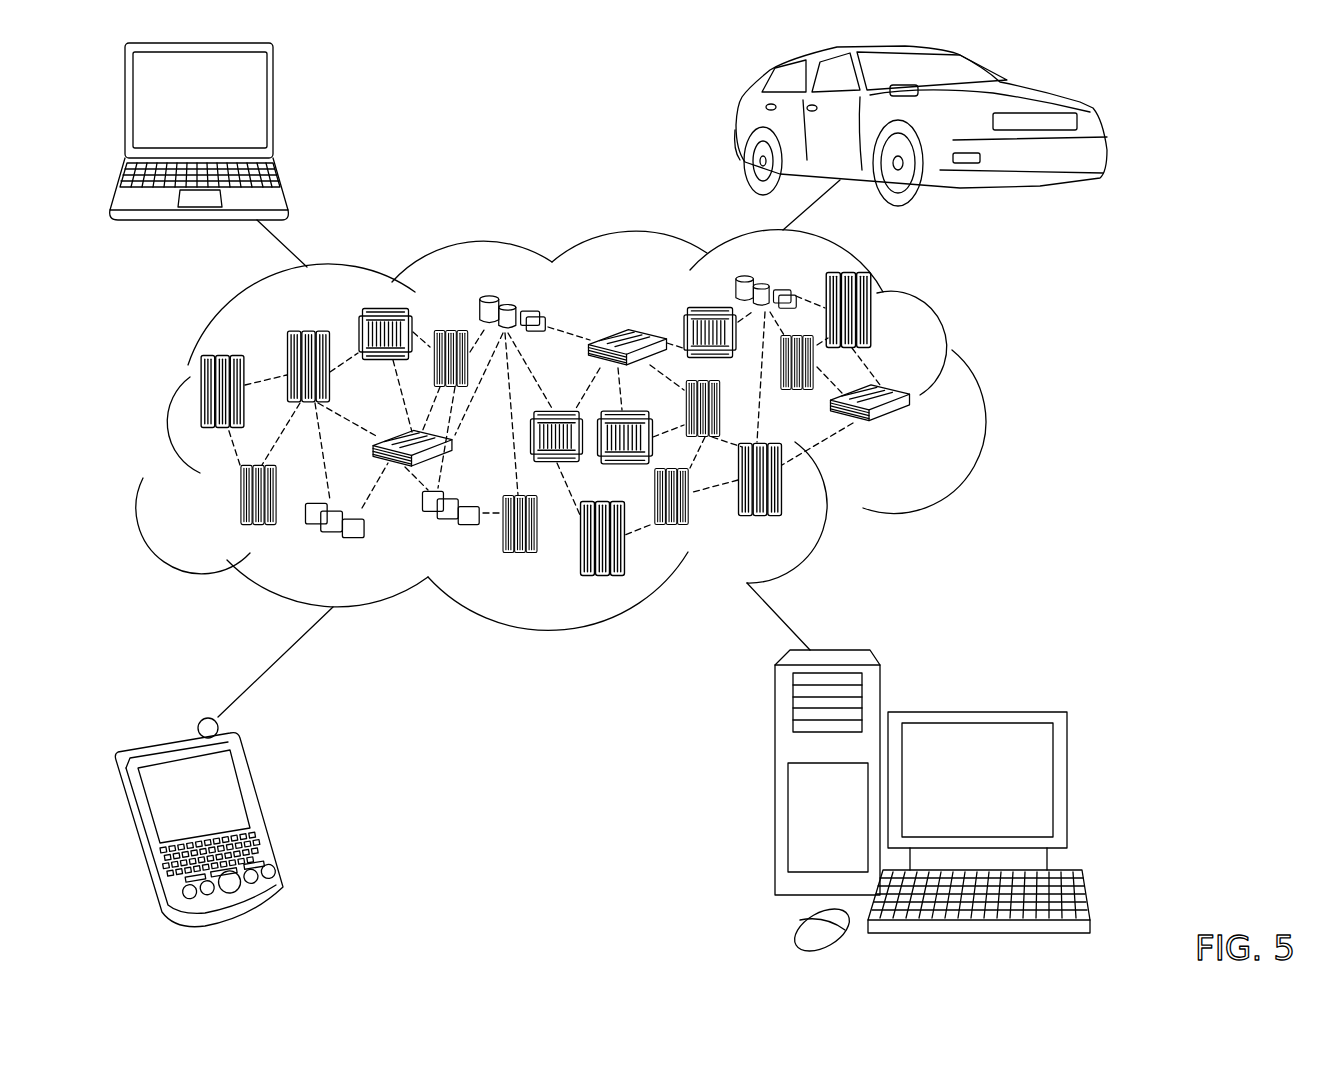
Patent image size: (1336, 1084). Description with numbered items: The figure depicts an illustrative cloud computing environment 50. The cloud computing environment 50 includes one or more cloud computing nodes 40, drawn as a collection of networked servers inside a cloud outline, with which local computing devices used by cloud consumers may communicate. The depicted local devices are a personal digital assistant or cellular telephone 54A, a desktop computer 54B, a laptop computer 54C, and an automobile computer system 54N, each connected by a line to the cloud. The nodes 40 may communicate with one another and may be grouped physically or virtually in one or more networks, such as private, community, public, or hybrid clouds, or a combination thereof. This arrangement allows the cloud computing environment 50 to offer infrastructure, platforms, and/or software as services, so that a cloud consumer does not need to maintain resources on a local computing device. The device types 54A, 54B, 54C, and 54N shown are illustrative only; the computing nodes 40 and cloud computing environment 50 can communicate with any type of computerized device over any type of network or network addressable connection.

The cloud computing environment 50 is at (975, 400).
The cloud computing nodes 40 is at (612, 424).
The personal digital assistant (PDA) or cellular telephone 54A is at (263, 810).
The desktop computer 54B is at (978, 712).
The laptop computer 54C is at (276, 110).
The automobile computer system 54N is at (742, 127).